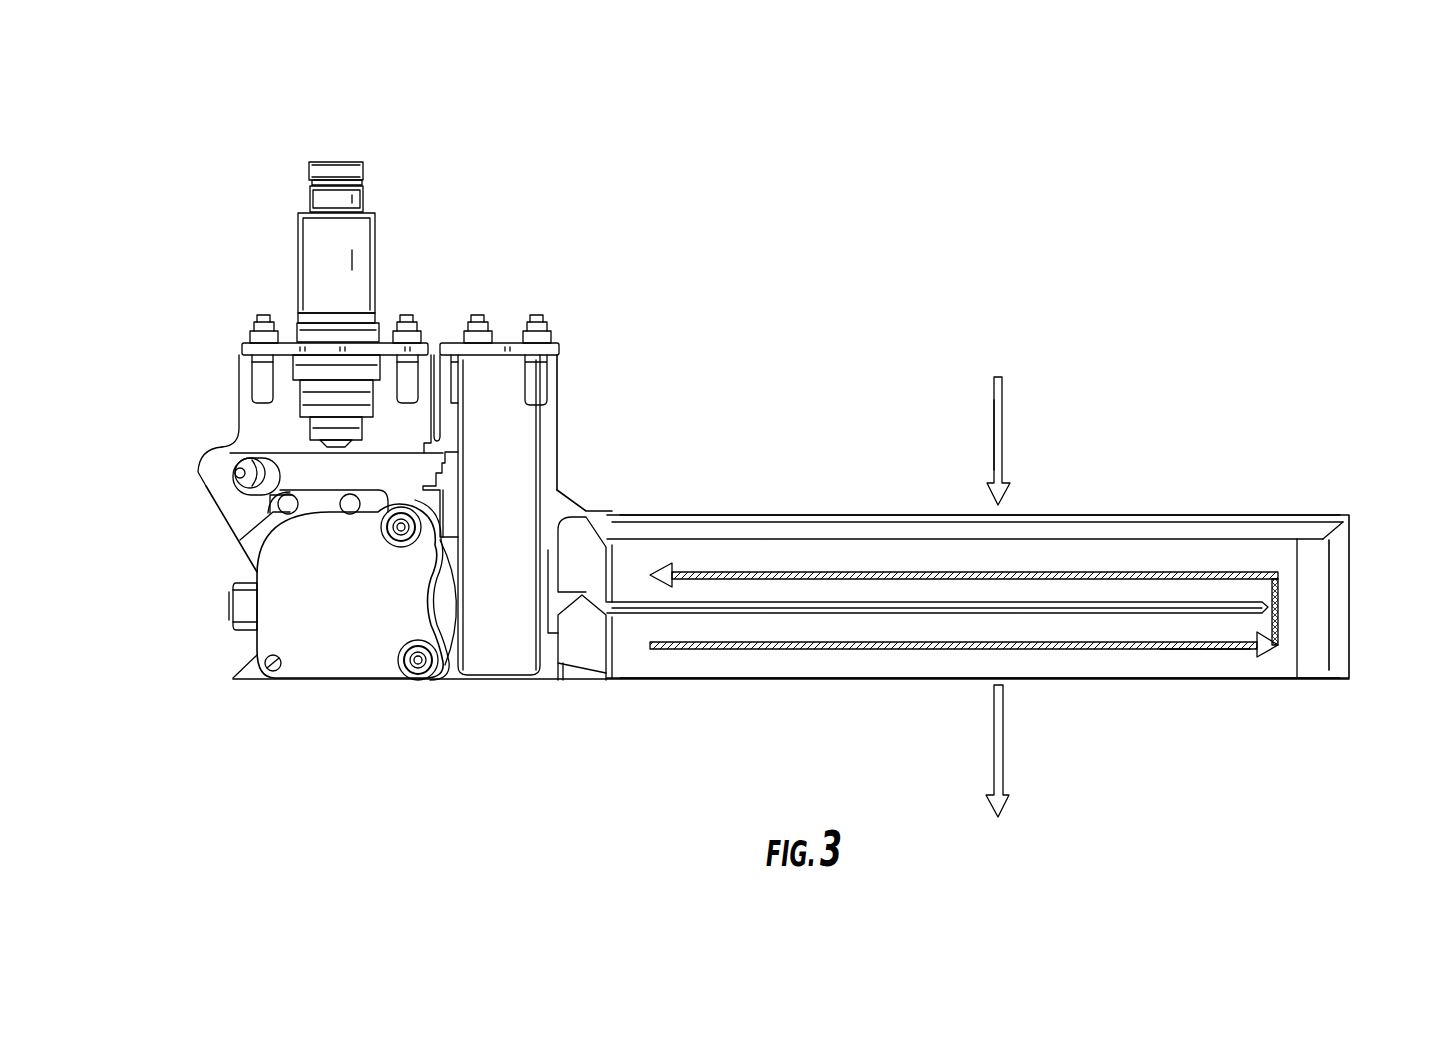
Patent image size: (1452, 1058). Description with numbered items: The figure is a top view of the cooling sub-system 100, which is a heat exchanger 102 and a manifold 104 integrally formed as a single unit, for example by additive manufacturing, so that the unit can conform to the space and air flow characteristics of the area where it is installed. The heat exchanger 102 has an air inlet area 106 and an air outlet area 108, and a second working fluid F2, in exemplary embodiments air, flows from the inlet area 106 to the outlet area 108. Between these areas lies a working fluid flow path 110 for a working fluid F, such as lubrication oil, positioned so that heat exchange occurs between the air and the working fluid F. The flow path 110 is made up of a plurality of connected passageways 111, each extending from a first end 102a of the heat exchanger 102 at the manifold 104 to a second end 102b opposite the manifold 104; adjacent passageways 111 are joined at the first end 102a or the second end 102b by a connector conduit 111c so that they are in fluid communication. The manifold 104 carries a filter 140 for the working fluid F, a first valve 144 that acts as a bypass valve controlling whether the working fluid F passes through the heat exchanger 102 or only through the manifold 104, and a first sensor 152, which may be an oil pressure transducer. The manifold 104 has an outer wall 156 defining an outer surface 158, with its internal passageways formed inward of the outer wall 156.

The cooling sub-system 100 is at (219, 160).
The heat exchanger 102 is at (902, 512).
The first end of the heat exchanger 102a is at (616, 488).
The second end of the heat exchanger 102b is at (1344, 462).
The manifold 104 is at (198, 475).
The air inlet area 106 is at (980, 446).
The air outlet area 108 is at (980, 747).
The working fluid flow path 110 is at (1197, 517).
The passageways 111 is at (793, 628).
The connector conduit 111c is at (1288, 622).
The filter 140 is at (328, 665).
The first valve 144 is at (498, 342).
The first sensor 152 is at (375, 250).
The outer wall 156 is at (225, 512).
The outer surface 158 is at (230, 395).
The working fluid F is at (1165, 650).
The second working fluid F2 is at (999, 399).